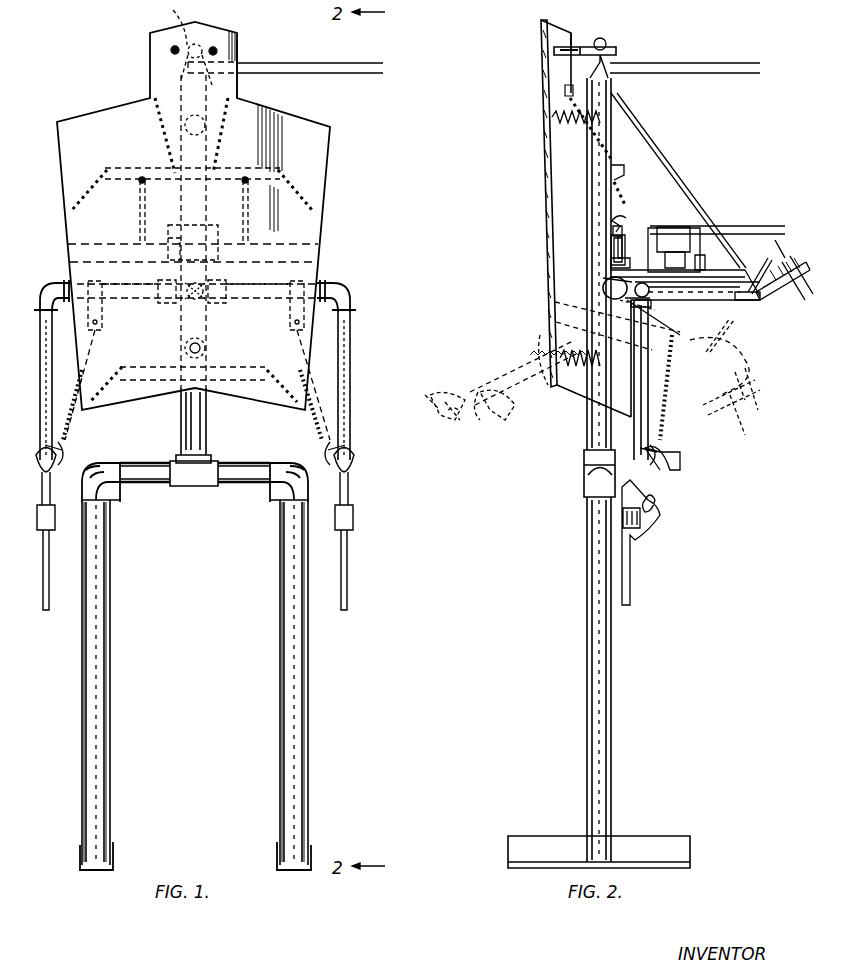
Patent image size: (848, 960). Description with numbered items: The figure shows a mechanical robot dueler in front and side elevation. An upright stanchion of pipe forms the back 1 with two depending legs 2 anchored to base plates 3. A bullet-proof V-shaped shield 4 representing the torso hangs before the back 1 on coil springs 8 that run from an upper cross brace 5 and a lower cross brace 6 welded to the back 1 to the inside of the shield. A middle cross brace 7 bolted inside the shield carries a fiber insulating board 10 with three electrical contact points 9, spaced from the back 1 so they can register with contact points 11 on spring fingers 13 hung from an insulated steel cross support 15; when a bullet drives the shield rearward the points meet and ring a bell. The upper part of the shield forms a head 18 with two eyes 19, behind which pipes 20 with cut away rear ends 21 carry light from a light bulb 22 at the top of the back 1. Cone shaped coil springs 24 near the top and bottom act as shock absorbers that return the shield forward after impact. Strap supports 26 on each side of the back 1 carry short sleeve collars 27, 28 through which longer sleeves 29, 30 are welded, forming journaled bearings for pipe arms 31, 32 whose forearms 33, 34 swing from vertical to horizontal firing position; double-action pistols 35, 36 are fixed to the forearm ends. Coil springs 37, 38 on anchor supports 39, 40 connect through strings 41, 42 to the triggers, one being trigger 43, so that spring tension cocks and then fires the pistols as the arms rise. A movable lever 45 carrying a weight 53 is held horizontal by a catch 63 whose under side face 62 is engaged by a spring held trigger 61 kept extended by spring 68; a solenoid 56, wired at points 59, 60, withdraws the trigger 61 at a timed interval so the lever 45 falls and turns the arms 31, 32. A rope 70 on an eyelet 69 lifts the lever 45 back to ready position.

In FIG. 1, the back 1 is at (180, 422).
In FIG. 2, the back 1 is at (586, 427).
In FIG. 1, the legs 2 is at (111, 800).
In FIG. 2, the legs 2 is at (587, 792).
In FIG. 1, the base plate 3 is at (114, 860).
In FIG. 2, the base plate 3 is at (507, 846).
In FIG. 1, the V-shaped shield 4 is at (60, 176).
In FIG. 2, the V-shaped shield 4 is at (548, 176).
In FIG. 1, the upper cross brace 5 is at (112, 170).
In FIG. 2, the upper cross brace 5 is at (626, 175).
In FIG. 1, the lower cross brace 6 is at (156, 370).
In FIG. 1, the middle cross brace 7 is at (100, 248).
In FIG. 2, the middle cross brace 7 is at (610, 253).
In FIG. 1, the coil springs 8 is at (165, 140).
In FIG. 2, the coil springs 8 is at (565, 98).
In FIG. 2, the electrical contact points 9 is at (625, 233).
In FIG. 1, the fiber insulating board 10 is at (178, 268).
In FIG. 2, the fiber insulating board 10 is at (628, 263).
In FIG. 2, the electrical contact points 11 is at (625, 250).
In FIG. 2, the spring fingers 13 is at (630, 226).
In FIG. 1, the insulated steel cross support 15 is at (170, 235).
In FIG. 2, the insulated steel cross support 15 is at (620, 222).
In FIG. 1, the head 18 is at (238, 56).
In FIG. 2, the head 18 is at (553, 49).
In FIG. 1, the eyes 19 is at (172, 50).
In FIG. 2, the eyes 19 is at (546, 56).
In FIG. 1, the pipes 20 is at (174, 48).
In FIG. 2, the pipes 20 is at (571, 33).
In FIG. 2, the cut away rear ends 21 is at (595, 46).
In FIG. 1, the light bulb 22 is at (168, 25).
In FIG. 2, the light bulb 22 is at (612, 52).
In FIG. 1, the cone shaped coil springs 24 is at (197, 117).
In FIG. 2, the cone shaped coil springs 24 is at (584, 126).
In FIG. 1, the strap supports 26 is at (198, 302).
In FIG. 2, the strap supports 26 is at (603, 291).
In FIG. 1, the short sleeve collar 27 is at (166, 308).
In FIG. 1, the short sleeve collar 28 is at (218, 306).
In FIG. 1, the longer sleeve 29 is at (132, 285).
In FIG. 1, the longer sleeve 30 is at (252, 285).
In FIG. 1, the pipe arm 31 is at (70, 283).
In FIG. 1, the pipe arm 32 is at (320, 283).
In FIG. 1, the forearm 33 is at (52, 355).
In FIG. 2, the forearm 33 is at (504, 362).
In FIG. 1, the forearm 34 is at (352, 355).
In FIG. 1, the double-action pistol 35 is at (58, 462).
In FIG. 2, the double-action pistol 35 is at (678, 462).
In FIG. 1, the double-action pistol 36 is at (356, 462).
In FIG. 1, the coil spring 37 is at (72, 420).
In FIG. 2, the coil spring 37 is at (665, 414).
In FIG. 1, the coil spring 38 is at (318, 420).
In FIG. 1, the anchor support 39 is at (104, 318).
In FIG. 2, the anchor support 39 is at (668, 312).
In FIG. 1, the anchor support 40 is at (288, 318).
In FIG. 1, the string 41 is at (66, 446).
In FIG. 2, the string 41 is at (662, 448).
In FIG. 1, the string 42 is at (323, 446).
In FIG. 2, the trigger 43 is at (655, 508).
In FIG. 2, the movable lever 45 is at (732, 300).
In FIG. 2, the weight 53 is at (790, 300).
In FIG. 2, the solenoid 56 is at (675, 260).
In FIG. 2, the point 59 is at (673, 239).
In FIG. 2, the point 60 is at (674, 241).
In FIG. 2, the spring held trigger 61 is at (701, 256).
In FIG. 2, the under side face 62 is at (672, 300).
In FIG. 2, the catch 63 is at (732, 240).
In FIG. 2, the spring 68 is at (650, 294).
In FIG. 2, the eyelet 69 is at (752, 300).
In FIG. 2, the rope 70 is at (762, 262).